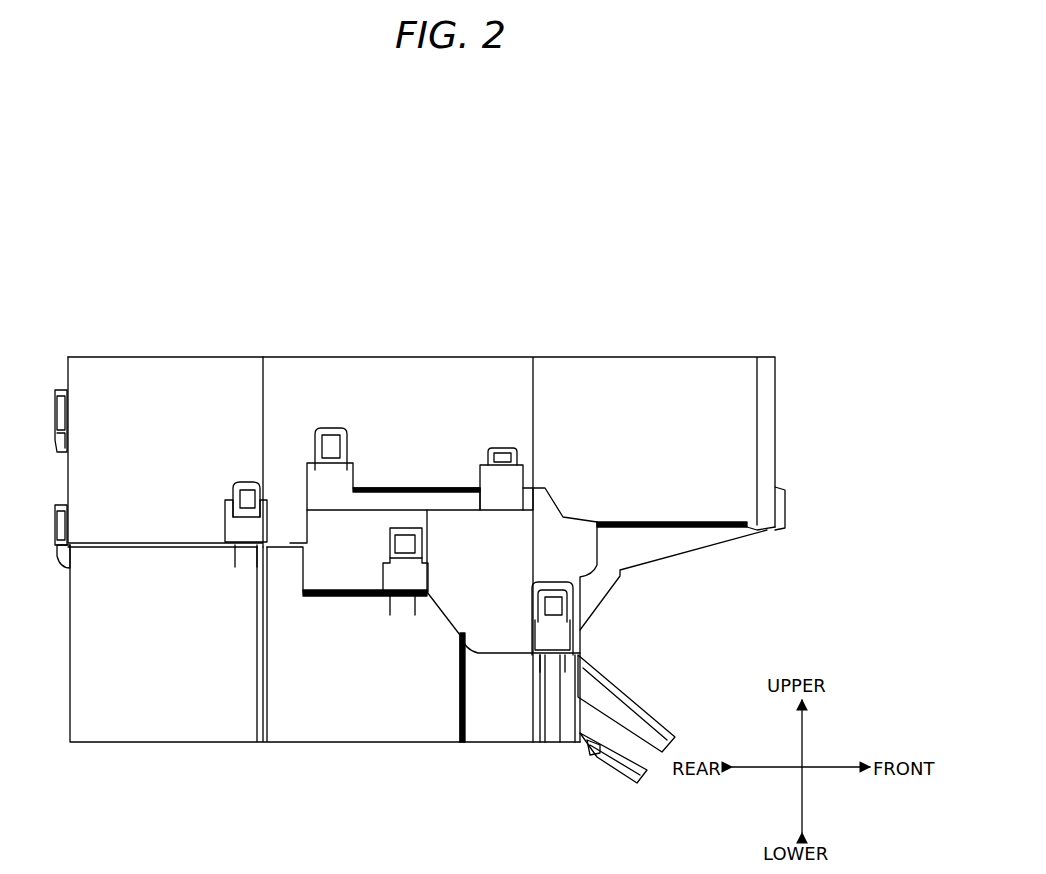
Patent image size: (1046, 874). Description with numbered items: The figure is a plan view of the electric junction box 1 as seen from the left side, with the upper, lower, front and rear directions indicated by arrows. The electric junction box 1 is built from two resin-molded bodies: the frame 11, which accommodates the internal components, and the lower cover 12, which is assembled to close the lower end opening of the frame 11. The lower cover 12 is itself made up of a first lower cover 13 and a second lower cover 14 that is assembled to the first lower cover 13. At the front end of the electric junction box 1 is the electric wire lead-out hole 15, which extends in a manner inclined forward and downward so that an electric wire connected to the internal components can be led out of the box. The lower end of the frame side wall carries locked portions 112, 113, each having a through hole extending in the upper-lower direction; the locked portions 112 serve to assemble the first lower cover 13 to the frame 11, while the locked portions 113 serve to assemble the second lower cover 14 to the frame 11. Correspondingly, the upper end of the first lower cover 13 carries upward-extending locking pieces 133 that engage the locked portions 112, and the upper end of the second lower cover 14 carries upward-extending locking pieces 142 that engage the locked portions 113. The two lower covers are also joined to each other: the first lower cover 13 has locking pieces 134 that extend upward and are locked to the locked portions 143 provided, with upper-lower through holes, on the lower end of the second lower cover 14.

The electric junction box 1 is at (754, 283).
The frame 11 is at (231, 357).
The lower cover 12 is at (495, 798).
The first lower cover 13 is at (407, 697).
The second lower cover 14 is at (492, 640).
The electric wire lead-out hole 15 is at (625, 705).
The locked portion 112 is at (240, 536).
The locked portion 113 is at (340, 482).
The locking piece 133 is at (247, 482).
The locking piece 134 is at (410, 538).
The locking piece 142 is at (333, 445).
The locked portion 143 is at (400, 580).